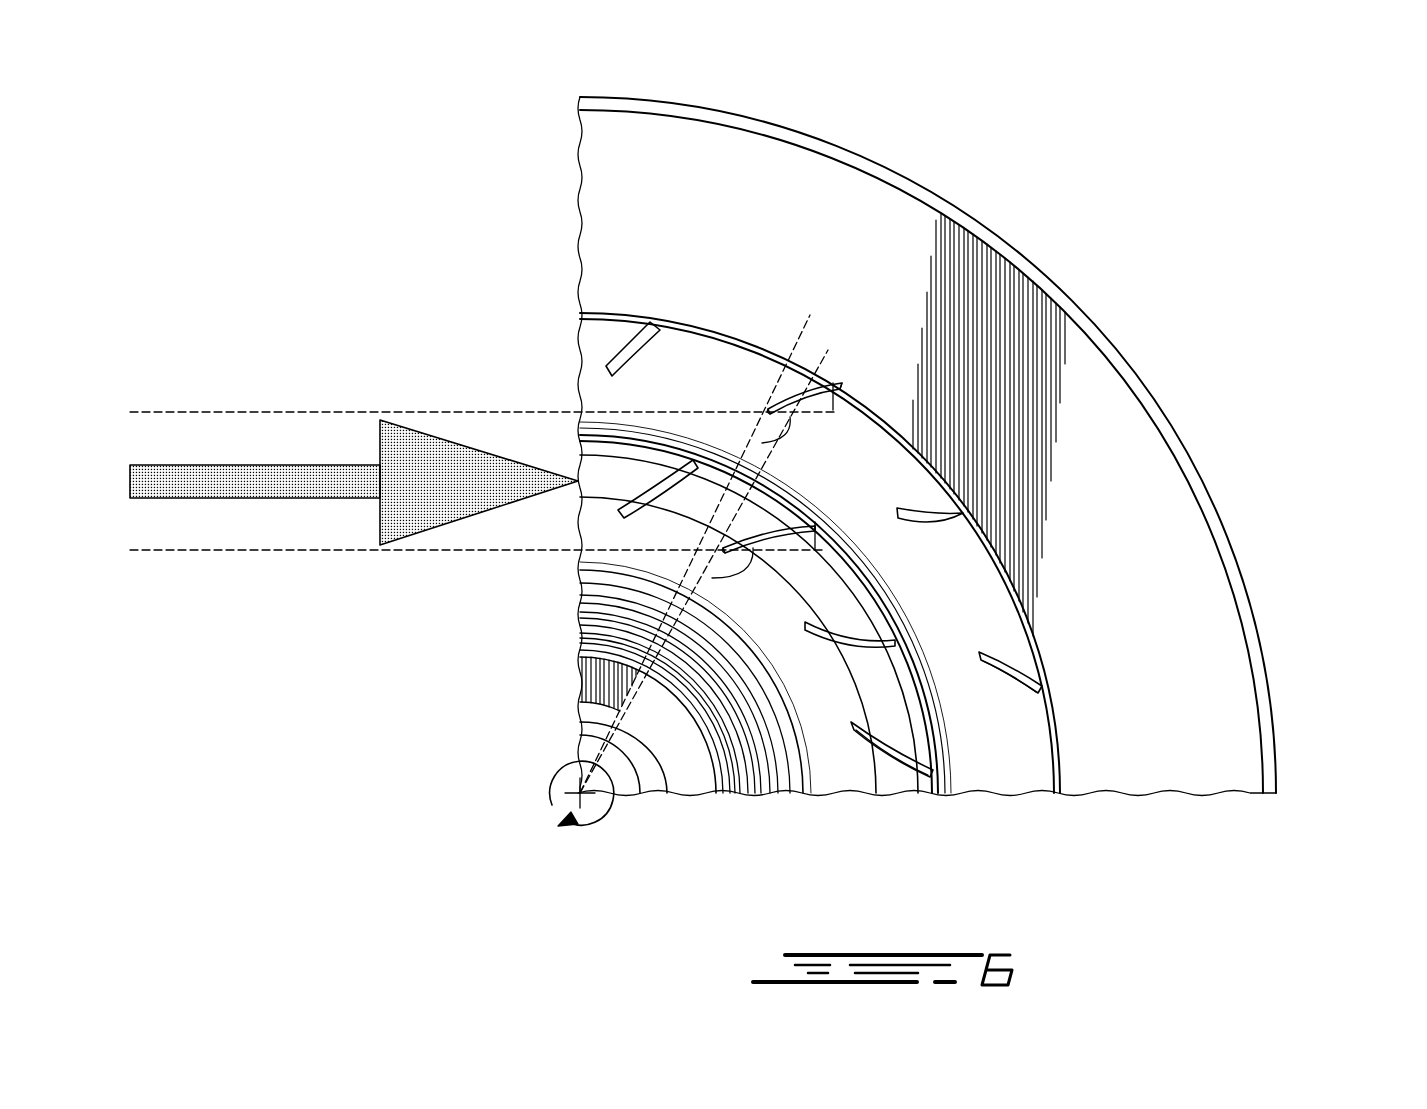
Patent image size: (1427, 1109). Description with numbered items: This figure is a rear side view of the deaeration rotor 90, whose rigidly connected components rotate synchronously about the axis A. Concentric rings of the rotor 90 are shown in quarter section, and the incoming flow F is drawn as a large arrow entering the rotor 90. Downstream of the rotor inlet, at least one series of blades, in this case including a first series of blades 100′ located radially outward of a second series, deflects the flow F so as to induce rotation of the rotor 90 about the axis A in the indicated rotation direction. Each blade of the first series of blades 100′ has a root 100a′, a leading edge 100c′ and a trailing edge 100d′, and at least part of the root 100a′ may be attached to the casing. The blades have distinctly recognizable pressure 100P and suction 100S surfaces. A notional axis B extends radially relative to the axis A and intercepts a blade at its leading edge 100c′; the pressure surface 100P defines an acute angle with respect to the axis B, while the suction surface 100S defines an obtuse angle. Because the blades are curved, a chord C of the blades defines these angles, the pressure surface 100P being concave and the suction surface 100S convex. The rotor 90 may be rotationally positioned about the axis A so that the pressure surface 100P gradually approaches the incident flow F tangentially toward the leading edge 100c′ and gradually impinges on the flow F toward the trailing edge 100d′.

The rotor 90 is at (1326, 162).
The first series of blades 100′ is at (1047, 815).
The root 100a′ is at (805, 407).
The leading edge 100c′ is at (766, 409).
The trailing edge 100d′ is at (833, 388).
The pressure surface 100P is at (893, 745).
The suction surface 100S is at (880, 765).
The axis A is at (580, 793).
The notional axis B is at (800, 338).
The chord C is at (788, 484).
The flow F is at (210, 551).